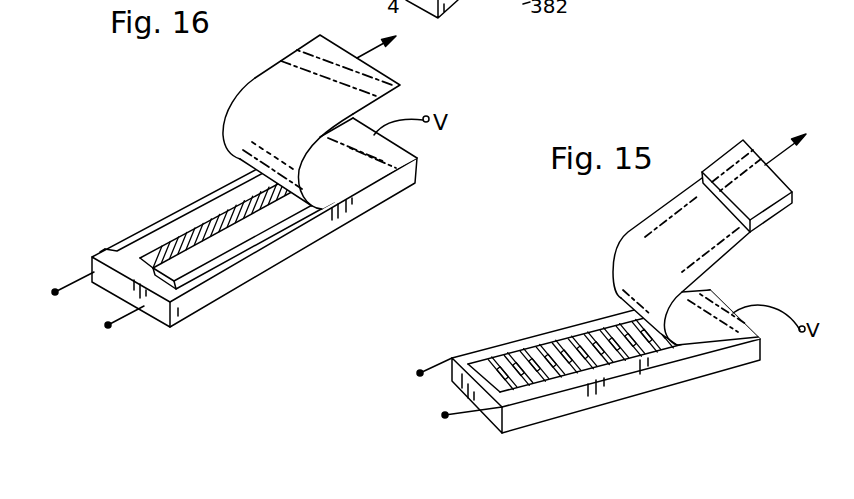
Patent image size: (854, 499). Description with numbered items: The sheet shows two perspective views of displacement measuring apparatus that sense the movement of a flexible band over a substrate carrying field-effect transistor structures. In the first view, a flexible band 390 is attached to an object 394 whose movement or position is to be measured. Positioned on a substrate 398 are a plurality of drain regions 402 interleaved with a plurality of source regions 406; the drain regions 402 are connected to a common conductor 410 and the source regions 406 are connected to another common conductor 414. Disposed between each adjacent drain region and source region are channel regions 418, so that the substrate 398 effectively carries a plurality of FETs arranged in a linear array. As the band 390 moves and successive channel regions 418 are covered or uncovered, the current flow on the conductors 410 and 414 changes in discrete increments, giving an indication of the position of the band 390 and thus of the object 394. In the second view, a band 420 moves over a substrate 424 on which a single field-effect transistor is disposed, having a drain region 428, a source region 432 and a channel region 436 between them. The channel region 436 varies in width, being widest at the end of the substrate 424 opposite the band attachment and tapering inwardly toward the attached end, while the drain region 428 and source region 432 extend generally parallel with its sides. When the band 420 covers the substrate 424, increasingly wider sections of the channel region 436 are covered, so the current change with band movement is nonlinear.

In FIG. 16, the band 420 is at (262, 78).
In FIG. 16, the substrate 424 is at (209, 295).
In FIG. 16, the drain region 428 is at (180, 221).
In FIG. 16, the source region 432 is at (258, 232).
In FIG. 16, the channel region 436 is at (103, 287).
In FIG. 15, the flexible band 390 is at (712, 239).
In FIG. 15, the object 394 is at (758, 197).
In FIG. 15, the substrate 398 is at (622, 387).
In FIG. 15, the drain regions 402 is at (568, 350).
In FIG. 15, the source regions 406 is at (568, 382).
In FIG. 15, the common conductor 410 is at (447, 362).
In FIG. 15, the common conductor 414 is at (448, 416).
In FIG. 15, the channel regions 418 is at (630, 352).